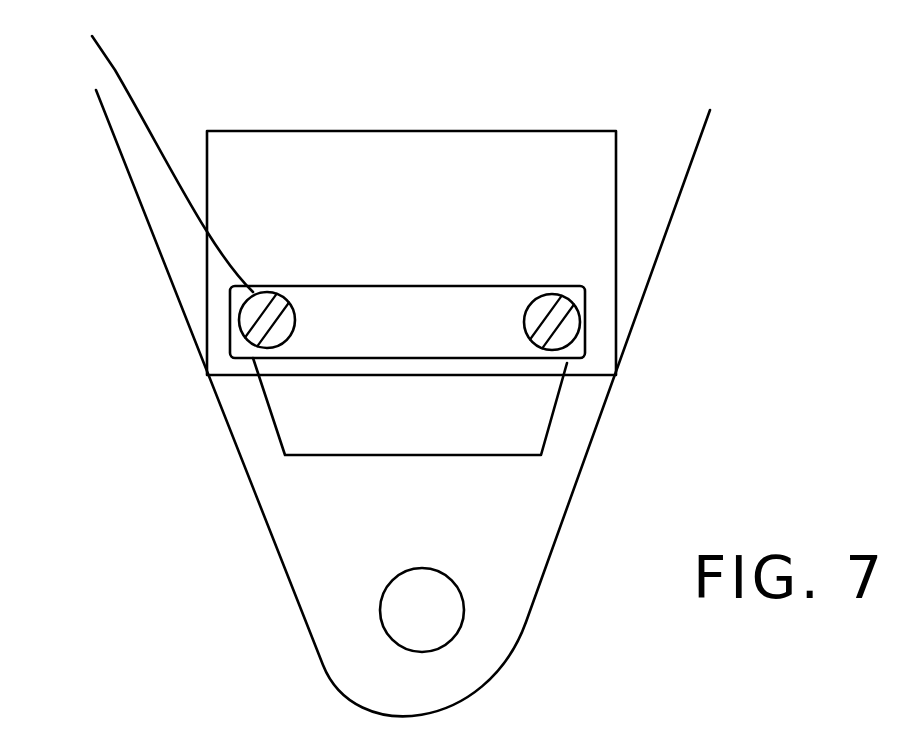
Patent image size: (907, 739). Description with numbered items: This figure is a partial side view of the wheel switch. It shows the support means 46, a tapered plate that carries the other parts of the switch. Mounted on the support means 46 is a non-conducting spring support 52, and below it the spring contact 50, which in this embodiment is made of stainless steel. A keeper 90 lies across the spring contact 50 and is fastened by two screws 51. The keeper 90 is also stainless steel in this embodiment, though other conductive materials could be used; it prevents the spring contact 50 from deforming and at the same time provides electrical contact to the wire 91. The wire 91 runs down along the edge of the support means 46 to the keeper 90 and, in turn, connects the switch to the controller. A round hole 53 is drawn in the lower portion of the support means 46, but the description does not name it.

The support means 46 is at (145, 215).
The wire 91 is at (115, 70).
The non-conducting spring support 52 is at (617, 215).
The keeper 90 is at (236, 350).
The screws 51 is at (568, 330).
The spring contact 50 is at (545, 440).
The mounting hole 53 is at (508, 597).